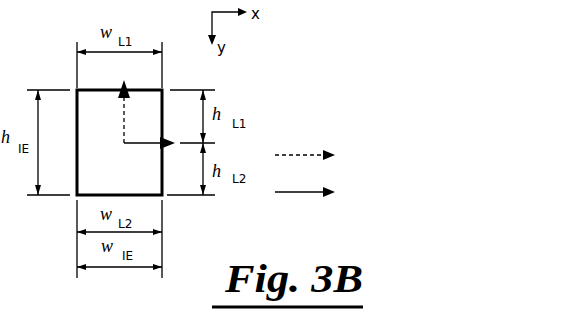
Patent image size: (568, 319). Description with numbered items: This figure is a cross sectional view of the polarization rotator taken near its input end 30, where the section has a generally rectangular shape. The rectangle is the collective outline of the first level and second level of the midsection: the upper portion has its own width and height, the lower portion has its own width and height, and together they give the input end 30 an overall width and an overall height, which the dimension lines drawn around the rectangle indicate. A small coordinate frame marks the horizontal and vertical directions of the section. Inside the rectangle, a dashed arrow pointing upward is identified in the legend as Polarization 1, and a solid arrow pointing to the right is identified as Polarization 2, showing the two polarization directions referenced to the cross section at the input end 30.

The input end 30 is at (93, 166).
The polarization 1 (dashed arrow) 1 is at (288, 123).
The polarization 2 (solid arrow) 2 is at (291, 169).